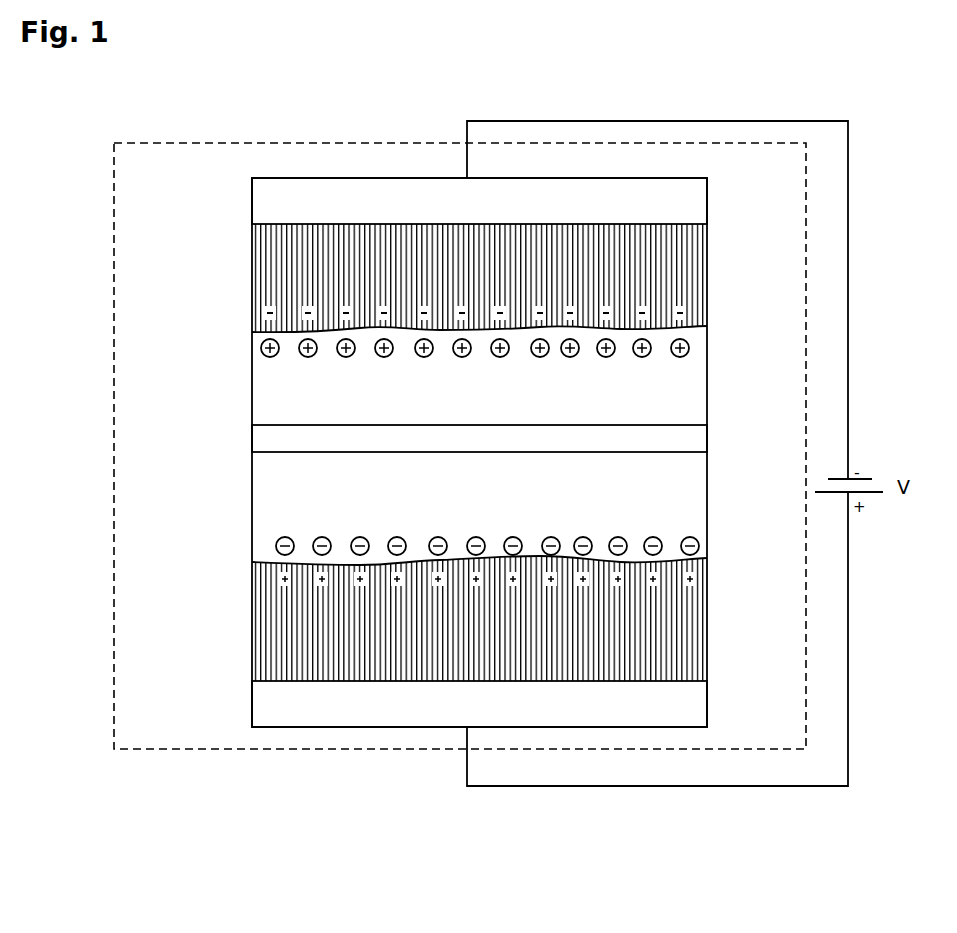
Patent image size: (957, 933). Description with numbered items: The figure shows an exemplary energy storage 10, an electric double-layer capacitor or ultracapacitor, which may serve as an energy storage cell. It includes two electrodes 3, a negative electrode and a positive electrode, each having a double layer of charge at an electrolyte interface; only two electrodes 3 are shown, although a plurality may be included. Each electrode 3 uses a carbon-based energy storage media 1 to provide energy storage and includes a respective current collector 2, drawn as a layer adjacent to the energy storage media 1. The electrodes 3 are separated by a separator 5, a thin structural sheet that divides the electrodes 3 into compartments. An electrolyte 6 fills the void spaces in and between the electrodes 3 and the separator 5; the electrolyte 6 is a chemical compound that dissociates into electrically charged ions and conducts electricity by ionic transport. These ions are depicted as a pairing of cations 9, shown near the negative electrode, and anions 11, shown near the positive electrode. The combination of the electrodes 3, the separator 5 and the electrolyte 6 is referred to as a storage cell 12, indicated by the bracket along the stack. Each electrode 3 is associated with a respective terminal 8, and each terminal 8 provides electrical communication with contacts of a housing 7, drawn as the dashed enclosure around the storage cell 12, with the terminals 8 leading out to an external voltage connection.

The energy storage media 1 is at (479, 452).
The current collector 2 is at (479, 452).
The electrode 3 is at (248, 330).
The separator 5 is at (479, 438).
The electrolyte 6 is at (265, 468).
The housing 7 is at (270, 750).
The terminal 8 is at (570, 121).
The cation 9 is at (262, 347).
The energy storage 10 is at (289, 828).
The anion 11 is at (277, 541).
The storage cell 12 is at (716, 727).